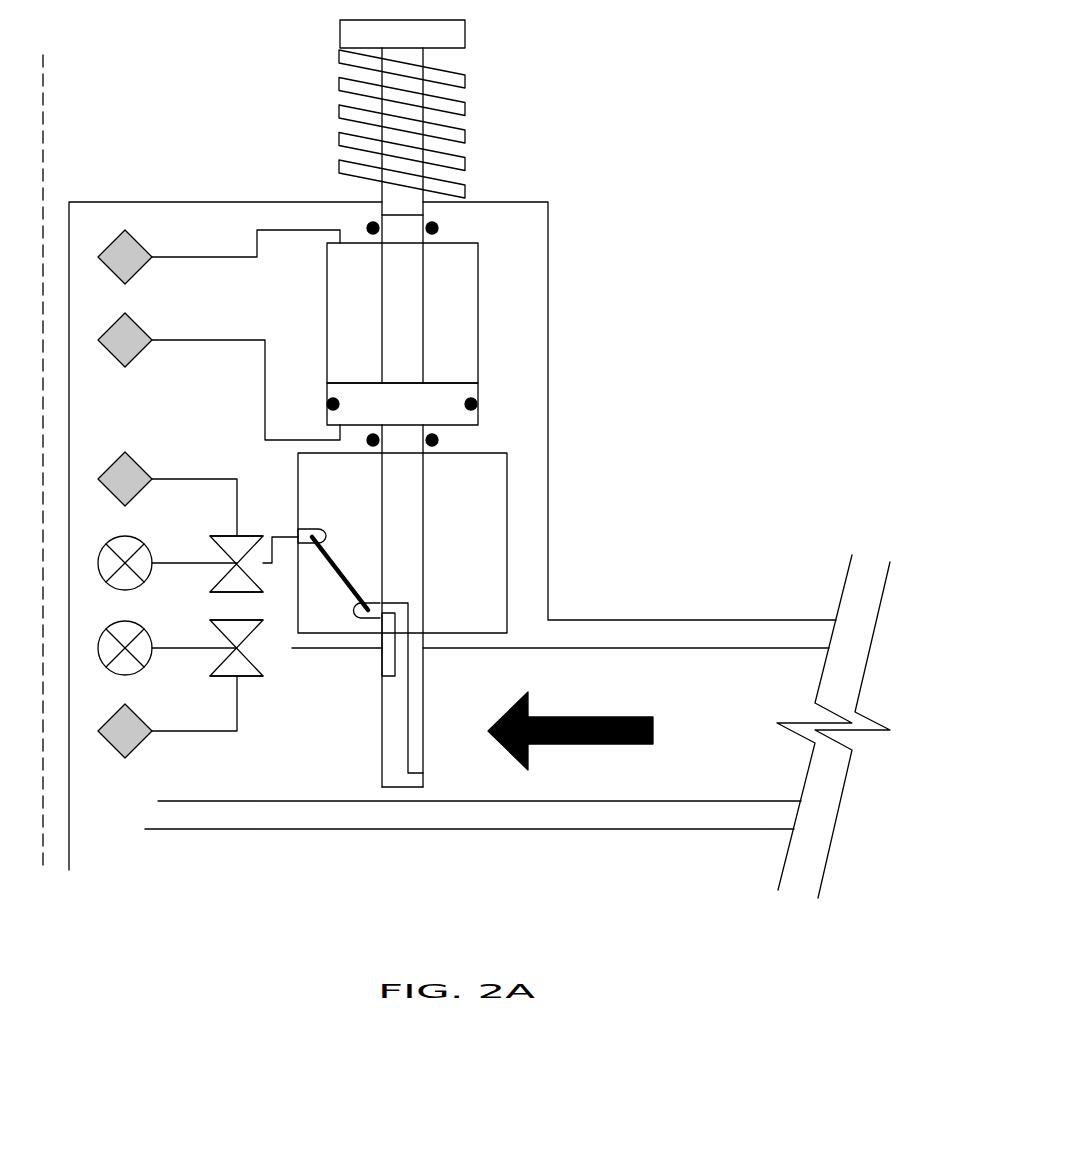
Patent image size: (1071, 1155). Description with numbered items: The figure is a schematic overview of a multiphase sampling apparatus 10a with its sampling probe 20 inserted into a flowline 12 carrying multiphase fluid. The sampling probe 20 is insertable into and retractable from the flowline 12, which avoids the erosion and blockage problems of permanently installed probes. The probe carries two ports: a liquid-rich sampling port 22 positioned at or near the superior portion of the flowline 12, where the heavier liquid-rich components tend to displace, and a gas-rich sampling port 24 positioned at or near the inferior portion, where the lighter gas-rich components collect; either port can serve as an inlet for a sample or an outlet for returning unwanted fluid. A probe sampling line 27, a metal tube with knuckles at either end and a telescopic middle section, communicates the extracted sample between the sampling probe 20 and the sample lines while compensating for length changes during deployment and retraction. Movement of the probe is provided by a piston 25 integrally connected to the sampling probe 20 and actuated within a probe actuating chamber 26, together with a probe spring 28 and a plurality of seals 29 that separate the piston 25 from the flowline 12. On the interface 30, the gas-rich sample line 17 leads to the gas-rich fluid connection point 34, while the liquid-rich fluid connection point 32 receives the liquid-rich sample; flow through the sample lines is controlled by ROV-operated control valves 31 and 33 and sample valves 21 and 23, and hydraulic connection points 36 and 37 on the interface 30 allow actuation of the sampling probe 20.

The multiphase sampling apparatus 10a is at (640, 182).
The flowline 12 is at (590, 830).
The gas-rich sample line 17 is at (210, 734).
The sampling probe 20 is at (429, 608).
The sample valve 21 is at (247, 534).
The liquid-rich sampling port 22 is at (390, 677).
The sample valve 23 is at (250, 677).
The gas-rich sampling port 24 is at (420, 772).
The piston 25 is at (458, 358).
The probe actuating chamber 26 is at (452, 280).
The probe sampling line 27 is at (340, 569).
The probe spring 28 is at (464, 82).
The seals 29 is at (478, 403).
The interface 30 is at (113, 856).
The ROV-operated control valve 31 is at (131, 538).
The liquid-rich fluid connection point 32 is at (139, 466).
The ROV-operated control valve 33 is at (131, 623).
The gas-rich fluid connection point 34 is at (139, 718).
The hydraulic connection point 36 is at (139, 244).
The hydraulic connection point 37 is at (139, 327).